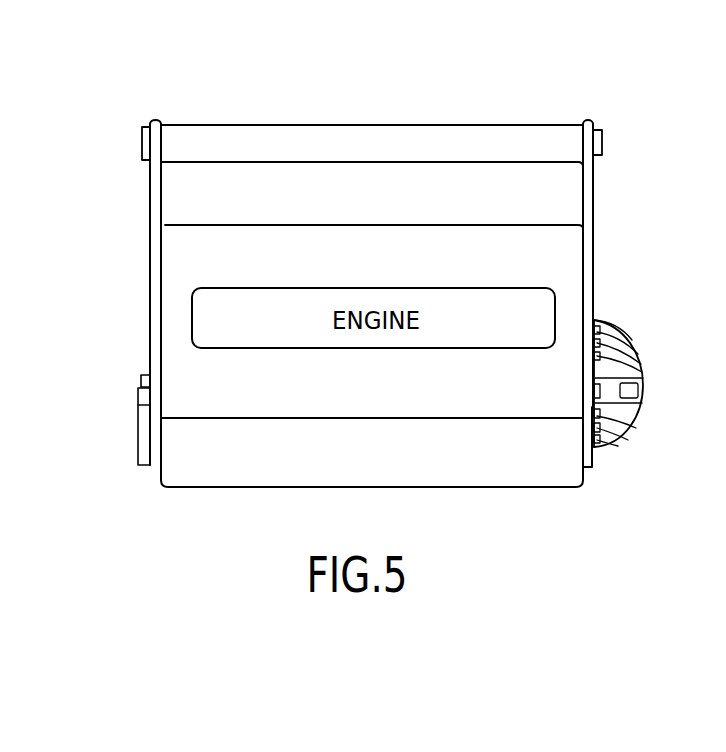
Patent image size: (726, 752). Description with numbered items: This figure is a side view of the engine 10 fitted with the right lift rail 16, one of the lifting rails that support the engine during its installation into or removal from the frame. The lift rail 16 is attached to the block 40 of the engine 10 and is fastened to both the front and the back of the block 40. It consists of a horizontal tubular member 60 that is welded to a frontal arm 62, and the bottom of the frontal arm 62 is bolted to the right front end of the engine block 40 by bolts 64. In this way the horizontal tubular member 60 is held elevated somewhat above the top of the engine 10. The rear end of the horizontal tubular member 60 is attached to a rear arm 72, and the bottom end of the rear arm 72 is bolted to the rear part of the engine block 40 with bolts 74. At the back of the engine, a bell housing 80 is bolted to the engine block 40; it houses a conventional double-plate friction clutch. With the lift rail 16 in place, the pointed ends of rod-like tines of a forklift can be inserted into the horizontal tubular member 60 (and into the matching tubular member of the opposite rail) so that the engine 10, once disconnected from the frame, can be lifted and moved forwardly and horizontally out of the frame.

The engine 10 is at (454, 206).
The first lift rail 16 is at (211, 110).
The engine block 40 is at (305, 403).
The horizontal tubular member 60 is at (402, 124).
The frontal arm 62 is at (157, 200).
The bolts 64 is at (141, 379).
The rear arm 72 is at (583, 189).
The bolts 74 is at (635, 346).
The bell housing 80 is at (626, 430).